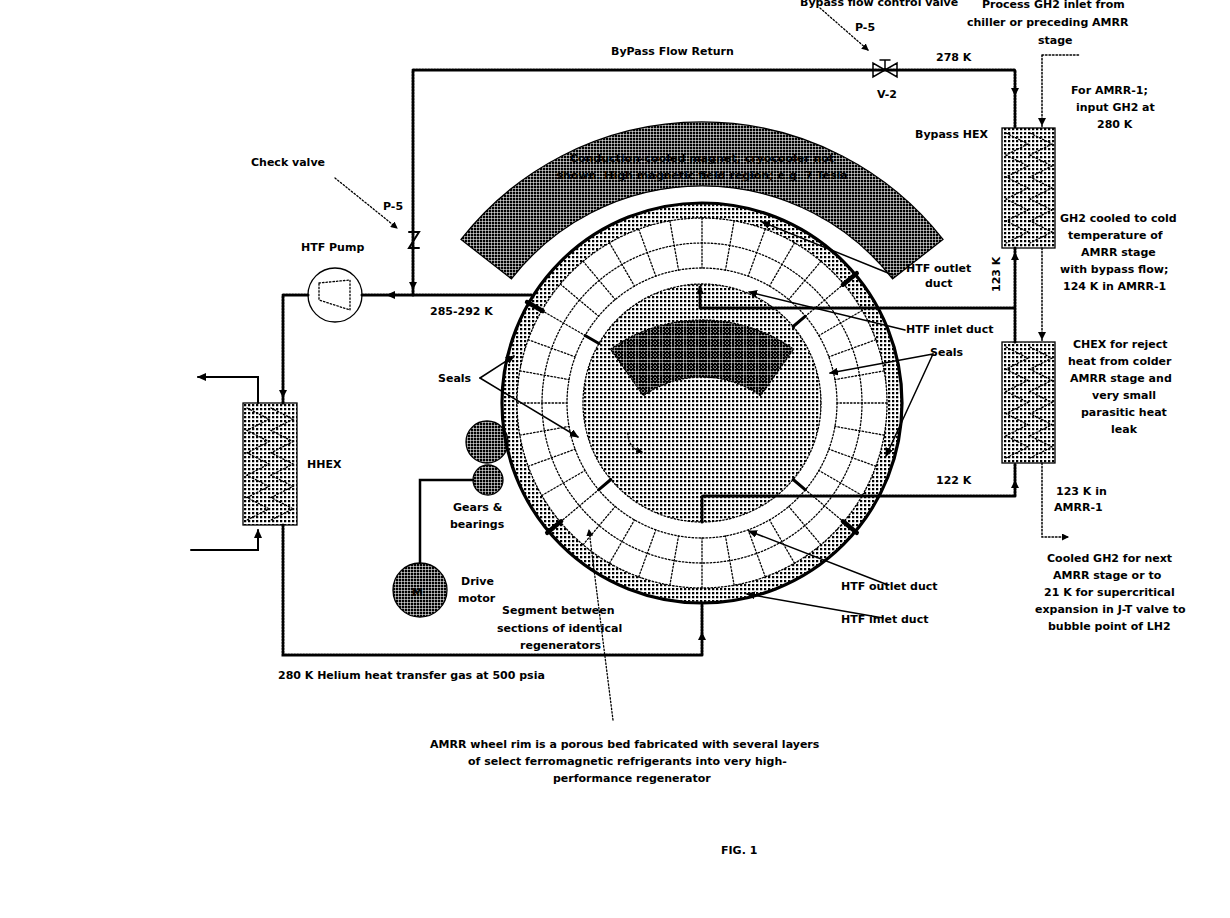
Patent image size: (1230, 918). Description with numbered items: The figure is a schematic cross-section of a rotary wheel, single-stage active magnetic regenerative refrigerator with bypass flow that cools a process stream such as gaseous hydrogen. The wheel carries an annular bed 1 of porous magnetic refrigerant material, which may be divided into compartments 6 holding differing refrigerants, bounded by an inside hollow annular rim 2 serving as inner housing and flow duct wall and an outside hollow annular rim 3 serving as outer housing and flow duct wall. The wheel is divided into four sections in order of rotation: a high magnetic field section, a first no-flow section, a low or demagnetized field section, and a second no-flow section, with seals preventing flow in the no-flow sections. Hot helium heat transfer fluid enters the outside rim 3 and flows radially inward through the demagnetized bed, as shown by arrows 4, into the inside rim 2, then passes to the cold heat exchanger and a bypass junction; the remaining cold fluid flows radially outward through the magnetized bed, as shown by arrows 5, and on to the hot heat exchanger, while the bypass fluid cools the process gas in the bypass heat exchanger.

The annular bed 1 is at (594, 510).
The inside hollow annular rim 2 is at (868, 518).
The outside hollow annular rim 3 is at (506, 347).
The arrows 4 is at (685, 587).
The arrows 5 is at (702, 403).
The compartments 6 is at (557, 492).